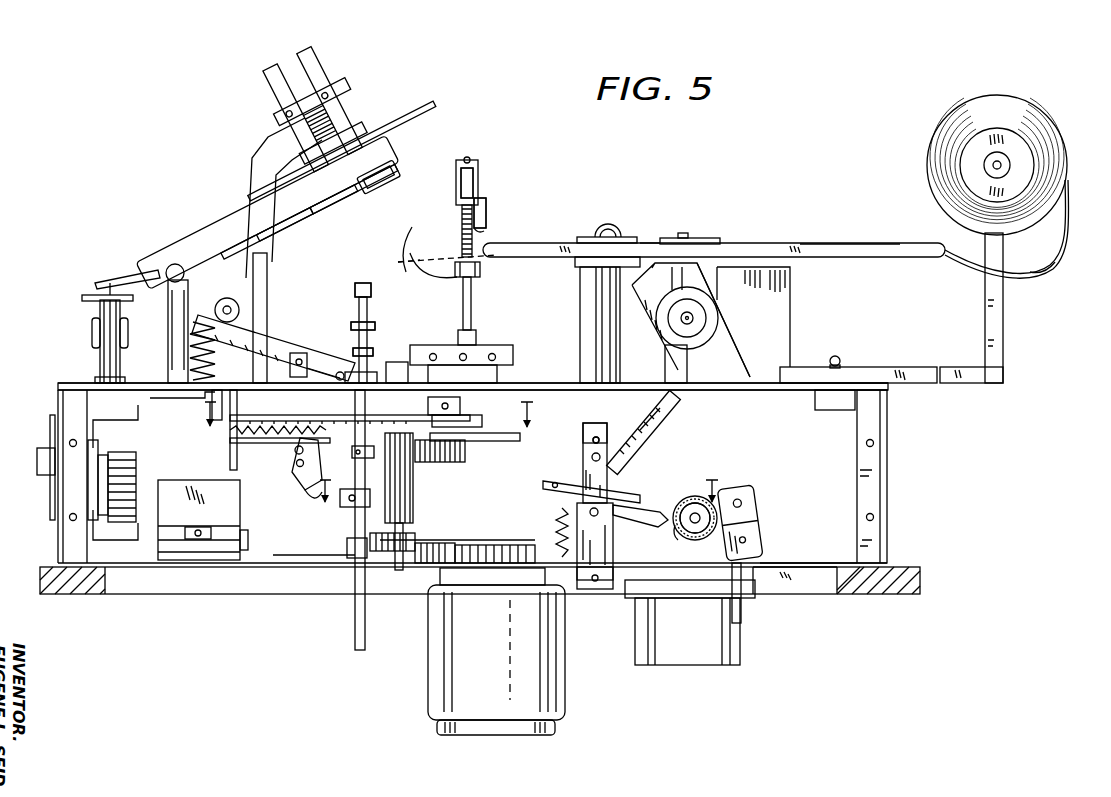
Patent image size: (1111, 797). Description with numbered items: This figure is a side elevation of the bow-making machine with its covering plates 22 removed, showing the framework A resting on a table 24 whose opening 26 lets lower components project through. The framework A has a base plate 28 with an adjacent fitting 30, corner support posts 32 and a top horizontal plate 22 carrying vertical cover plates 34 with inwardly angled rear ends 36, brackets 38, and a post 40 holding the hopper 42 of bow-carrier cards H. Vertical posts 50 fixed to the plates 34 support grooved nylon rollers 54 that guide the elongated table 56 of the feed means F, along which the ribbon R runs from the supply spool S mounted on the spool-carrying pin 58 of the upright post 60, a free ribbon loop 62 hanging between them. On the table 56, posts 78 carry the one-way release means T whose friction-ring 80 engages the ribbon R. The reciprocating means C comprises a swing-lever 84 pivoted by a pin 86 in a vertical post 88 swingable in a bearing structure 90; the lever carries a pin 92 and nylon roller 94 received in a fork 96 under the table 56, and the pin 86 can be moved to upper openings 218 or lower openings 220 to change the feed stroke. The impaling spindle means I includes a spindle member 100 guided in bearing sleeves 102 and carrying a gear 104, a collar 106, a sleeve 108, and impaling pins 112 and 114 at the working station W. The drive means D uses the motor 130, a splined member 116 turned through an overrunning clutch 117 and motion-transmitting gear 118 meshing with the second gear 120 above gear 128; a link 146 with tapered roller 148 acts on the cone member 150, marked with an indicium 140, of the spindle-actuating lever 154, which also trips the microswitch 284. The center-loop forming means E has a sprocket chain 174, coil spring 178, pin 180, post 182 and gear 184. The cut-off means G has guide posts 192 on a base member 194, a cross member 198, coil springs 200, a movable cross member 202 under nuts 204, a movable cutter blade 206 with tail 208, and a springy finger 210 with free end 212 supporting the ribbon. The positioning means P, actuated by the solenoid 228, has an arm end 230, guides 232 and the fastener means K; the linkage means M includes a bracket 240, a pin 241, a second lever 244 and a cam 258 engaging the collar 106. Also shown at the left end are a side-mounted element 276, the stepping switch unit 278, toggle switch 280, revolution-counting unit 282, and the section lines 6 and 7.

The covering plates 22 is at (548, 389).
The table 24 is at (870, 592).
The opening 26 is at (805, 594).
The base plate 28 is at (812, 562).
The bracket 30 is at (745, 600).
The support posts 32 is at (857, 490).
The cover plates 34 is at (580, 293).
The rear ends 36 is at (790, 290).
The brackets 38 is at (513, 353).
The post 40 is at (252, 192).
The hopper 42 is at (320, 68).
The vertical posts 50 is at (598, 318).
The nylon rollers 54 is at (706, 238).
The table 56 is at (862, 244).
The spool-carrying pin 58 is at (992, 164).
The upright post 60 is at (1004, 331).
The free ribbon loop 62 is at (1044, 272).
The posts 78 is at (590, 238).
The friction-ring 80 is at (611, 233).
The swing-lever 84 is at (647, 432).
The pin 86 is at (590, 436).
The vertical post 88 is at (614, 493).
The bearing structure 90 is at (590, 592).
The pin 92 is at (694, 318).
The nylon roller 94 is at (716, 333).
The fork 96 is at (745, 353).
The spindle member 100 is at (355, 625).
The bearing sleeves 102 is at (320, 556).
The gear 104 is at (352, 508).
The collar 106 is at (356, 455).
The sleeve 108 is at (390, 363).
The impaling pin 112 is at (358, 284).
The impaling pin 114 is at (374, 300).
The splined member 116 is at (413, 476).
The overrunning clutch 117 is at (350, 540).
The motion-transmitting gear 118 is at (408, 566).
The second gear 120 is at (455, 540).
The gear 128 is at (445, 586).
The motor 130 is at (482, 679).
The dial 140 is at (695, 518).
The link 146 is at (546, 481).
The tapered roller 148 is at (656, 507).
The cone member 150 is at (704, 537).
The spindle-actuating lever 154 is at (678, 530).
The sprocket chain 174 is at (362, 418).
The coil spring 178 is at (240, 433).
The pin 180 is at (212, 401).
The post 182 is at (434, 405).
The gear 184 is at (466, 456).
The guide posts 192 is at (472, 306).
The base member 194 is at (477, 339).
The cross member 198 is at (481, 271).
The coil springs 200 is at (462, 237).
The movable cross member 202 is at (477, 177).
The nuts 204 is at (470, 160).
The movable cutter blade 206 is at (487, 208).
The tail 208 is at (485, 225).
The springy finger 210 is at (424, 276).
The free end 212 is at (412, 232).
The upper openings 218 is at (596, 422).
The lower openings 220 is at (608, 466).
The solenoid 228 is at (96, 356).
The end 230 is at (430, 103).
The guides 232 is at (397, 179).
The bracket 240 is at (291, 370).
The pin 241 is at (324, 370).
The second lever 244 is at (291, 453).
The cam 258 is at (305, 482).
The knob 276 is at (46, 436).
The stepping switch unit 278 is at (205, 498).
The toggle switch 280 is at (838, 362).
The revolution-counting unit 282 is at (682, 665).
The microswitch 284 is at (760, 500).
The framework A is at (845, 447).
The reciprocating means C is at (657, 409).
The drive means D is at (450, 499).
The center-loop forming means E is at (458, 420).
The feed means F is at (818, 238).
The cut-off means G is at (494, 193).
The bow-carrier H is at (356, 193).
The impaling spindle means I is at (351, 327).
The fastener means K is at (313, 221).
The linkage means M is at (268, 325).
The positioning means P is at (398, 166).
The ribbon R is at (404, 256).
The supply spool S is at (1028, 108).
The one-way release means T is at (636, 240).
The working station W is at (361, 262).
The section line 6 is at (372, 418).
The section line 7 is at (511, 490).